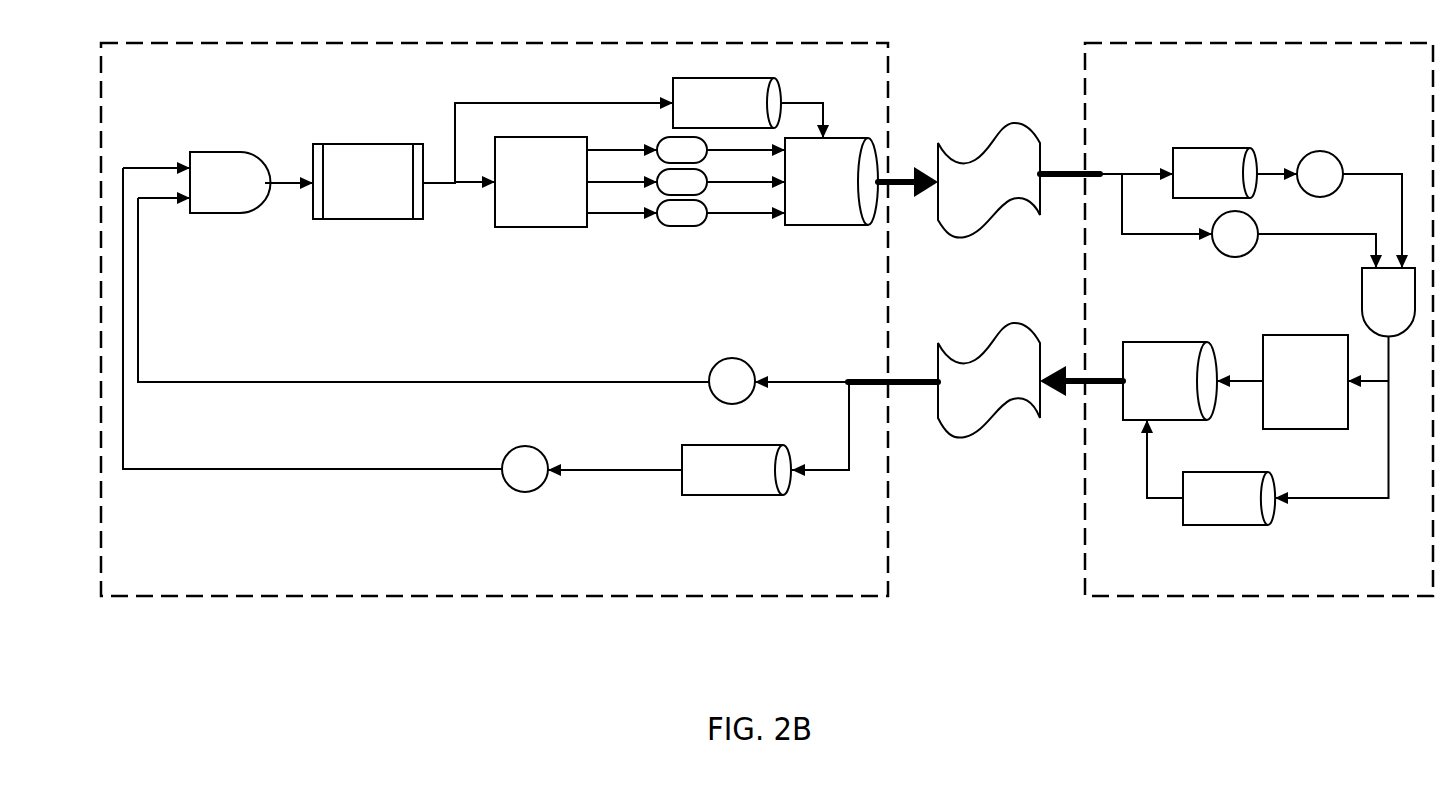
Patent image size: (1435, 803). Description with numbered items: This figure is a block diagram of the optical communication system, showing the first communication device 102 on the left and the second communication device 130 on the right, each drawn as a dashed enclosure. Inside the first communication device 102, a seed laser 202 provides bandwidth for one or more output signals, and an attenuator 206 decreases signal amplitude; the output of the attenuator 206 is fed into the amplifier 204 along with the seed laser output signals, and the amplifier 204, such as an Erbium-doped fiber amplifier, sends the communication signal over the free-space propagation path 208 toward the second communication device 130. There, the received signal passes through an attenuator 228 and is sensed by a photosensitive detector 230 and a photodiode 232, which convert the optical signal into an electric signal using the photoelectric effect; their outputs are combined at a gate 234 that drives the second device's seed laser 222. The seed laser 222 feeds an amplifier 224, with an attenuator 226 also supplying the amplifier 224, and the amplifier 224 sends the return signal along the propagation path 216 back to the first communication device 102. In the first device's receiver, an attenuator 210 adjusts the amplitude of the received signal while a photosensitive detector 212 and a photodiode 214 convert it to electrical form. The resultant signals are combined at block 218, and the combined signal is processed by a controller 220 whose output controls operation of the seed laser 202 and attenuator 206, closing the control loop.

The first communication device 102 is at (159, 84).
The second communication device 130 is at (1154, 112).
The seed laser 202 is at (520, 194).
The amplifier 204 is at (796, 196).
The attenuator 206 is at (702, 117).
The propagation path 208 is at (985, 145).
The attenuator 210 is at (712, 487).
The photosensitive detector 212 is at (710, 368).
The photodiode 214 is at (527, 490).
The propagation path 216 is at (992, 418).
The block 218 is at (217, 213).
The controller 220 is at (370, 219).
The seed laser 222 is at (1284, 392).
The amplifier 224 is at (1144, 392).
The attenuator 226 is at (1204, 511).
The attenuator 228 is at (1190, 187).
The photosensitive detector 230 is at (1215, 248).
The photodiode 232 is at (1322, 151).
The receive AND gate 234 is at (1362, 308).